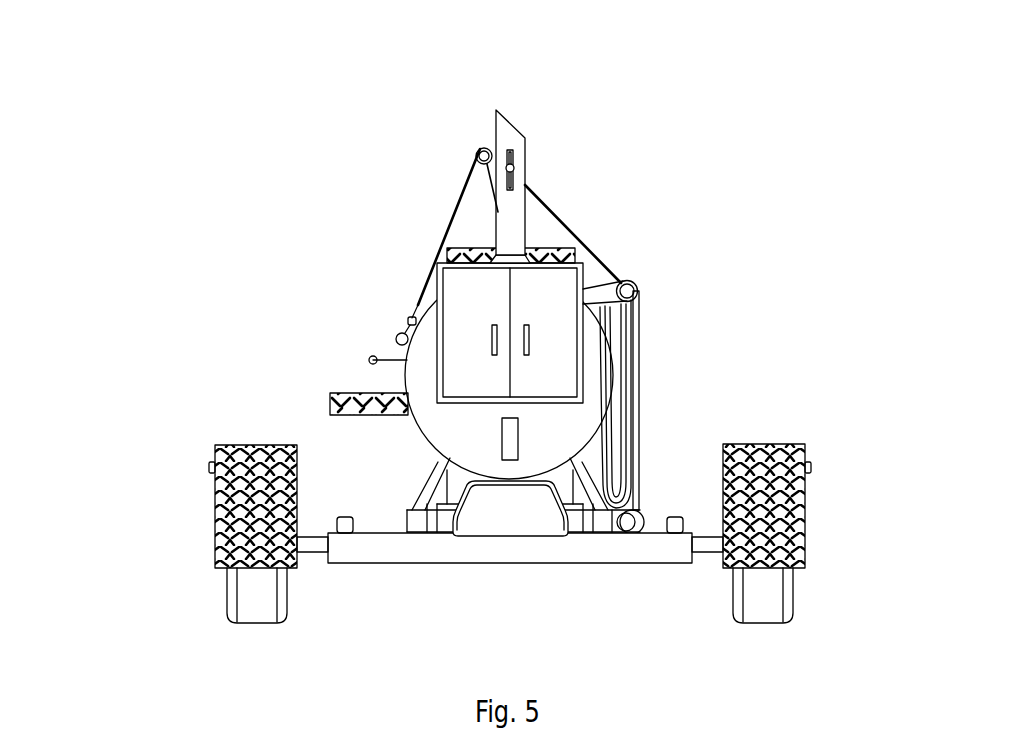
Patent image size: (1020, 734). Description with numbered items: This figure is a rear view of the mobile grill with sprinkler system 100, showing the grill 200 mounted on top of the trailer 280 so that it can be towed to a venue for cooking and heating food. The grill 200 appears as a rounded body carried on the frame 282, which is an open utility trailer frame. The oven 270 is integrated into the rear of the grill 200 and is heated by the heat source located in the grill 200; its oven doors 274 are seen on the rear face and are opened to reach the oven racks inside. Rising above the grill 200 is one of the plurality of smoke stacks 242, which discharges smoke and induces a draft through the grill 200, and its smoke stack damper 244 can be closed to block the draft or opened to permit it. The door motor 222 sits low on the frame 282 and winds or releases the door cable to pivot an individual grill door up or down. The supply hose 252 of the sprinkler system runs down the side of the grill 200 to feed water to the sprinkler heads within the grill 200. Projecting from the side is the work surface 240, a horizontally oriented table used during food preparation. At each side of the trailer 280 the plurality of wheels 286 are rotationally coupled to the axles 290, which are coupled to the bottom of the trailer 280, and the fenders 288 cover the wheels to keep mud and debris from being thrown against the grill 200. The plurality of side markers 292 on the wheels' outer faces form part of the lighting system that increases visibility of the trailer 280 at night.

The mobile grill with sprinkler system 100 is at (78, 138).
The grill 200 is at (452, 432).
The door motor 222 is at (642, 510).
The work surface 240 is at (336, 395).
The plurality of smoke stacks 242 is at (513, 124).
The smoke stack damper 244 is at (515, 168).
The supply hose 252 is at (628, 330).
The oven 270 is at (587, 268).
The oven doors 274 is at (458, 305).
The trailer 280 is at (884, 442).
The frame 282 is at (418, 537).
The plurality of wheels 286 is at (248, 612).
The fenders 288 is at (222, 535).
The axles 290 is at (306, 555).
The plurality of side markers 292 is at (209, 465).